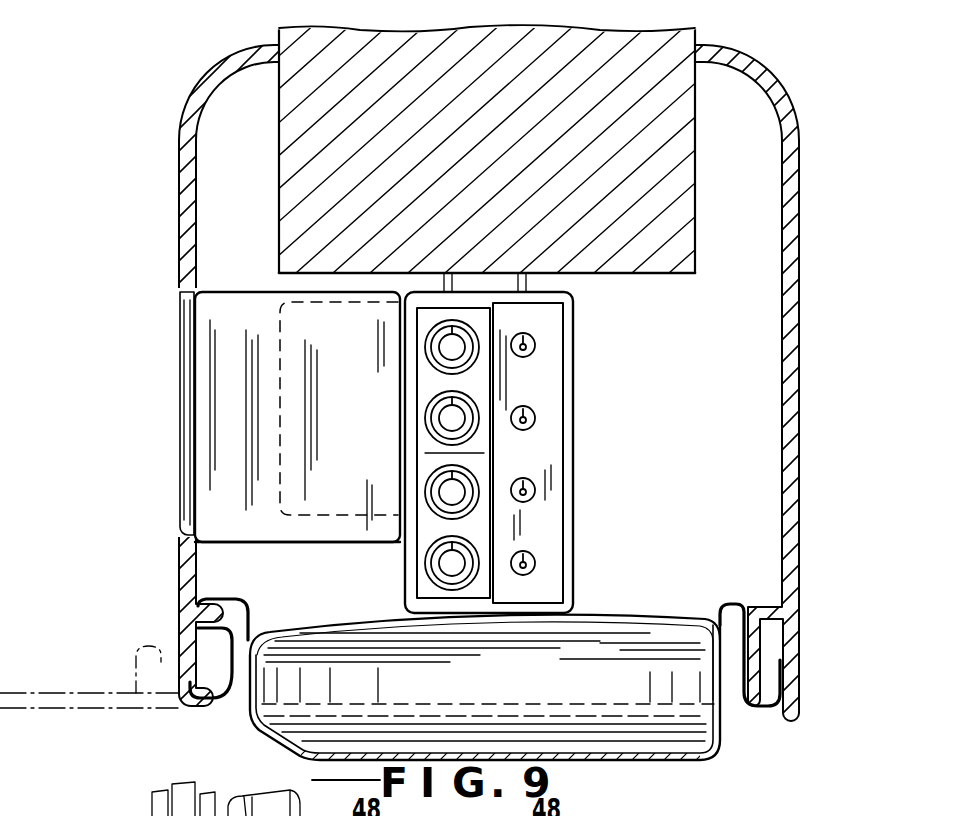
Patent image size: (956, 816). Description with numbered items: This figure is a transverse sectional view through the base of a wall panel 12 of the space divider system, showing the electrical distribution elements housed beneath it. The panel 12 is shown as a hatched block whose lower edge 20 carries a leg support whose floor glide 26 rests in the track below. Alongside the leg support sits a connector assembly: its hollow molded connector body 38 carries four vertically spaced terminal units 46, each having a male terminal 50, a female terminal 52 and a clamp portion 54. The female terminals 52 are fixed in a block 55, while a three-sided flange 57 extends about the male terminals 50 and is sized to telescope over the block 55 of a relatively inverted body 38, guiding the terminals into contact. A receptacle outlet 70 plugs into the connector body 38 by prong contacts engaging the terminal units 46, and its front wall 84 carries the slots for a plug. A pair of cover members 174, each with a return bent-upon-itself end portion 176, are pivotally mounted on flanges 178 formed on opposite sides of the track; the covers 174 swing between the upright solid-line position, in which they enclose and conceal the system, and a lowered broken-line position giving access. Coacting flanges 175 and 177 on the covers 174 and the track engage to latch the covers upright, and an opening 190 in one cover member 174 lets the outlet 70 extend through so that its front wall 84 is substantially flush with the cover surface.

The wall panel 12 is at (302, 117).
The lower edge 20 is at (655, 275).
The floor glide 26 is at (504, 677).
The connector body 38 is at (610, 808).
The terminal unit 46 is at (118, 802).
The male terminal 50 is at (533, 416).
The female terminal 52 is at (426, 412).
The clamp portion 54 is at (224, 798).
The block 55 is at (425, 453).
The three-sided flange 57 is at (564, 450).
The receptacle outlet 70 is at (252, 545).
The front wall 84 is at (178, 388).
The cover member 174 is at (178, 198).
The cover latching flange 175 is at (748, 606).
The return bent-upon-itself end portion 176 is at (768, 708).
The track latching flange 177 is at (715, 650).
The track flange 178 is at (796, 650).
The opening 190 is at (182, 318).